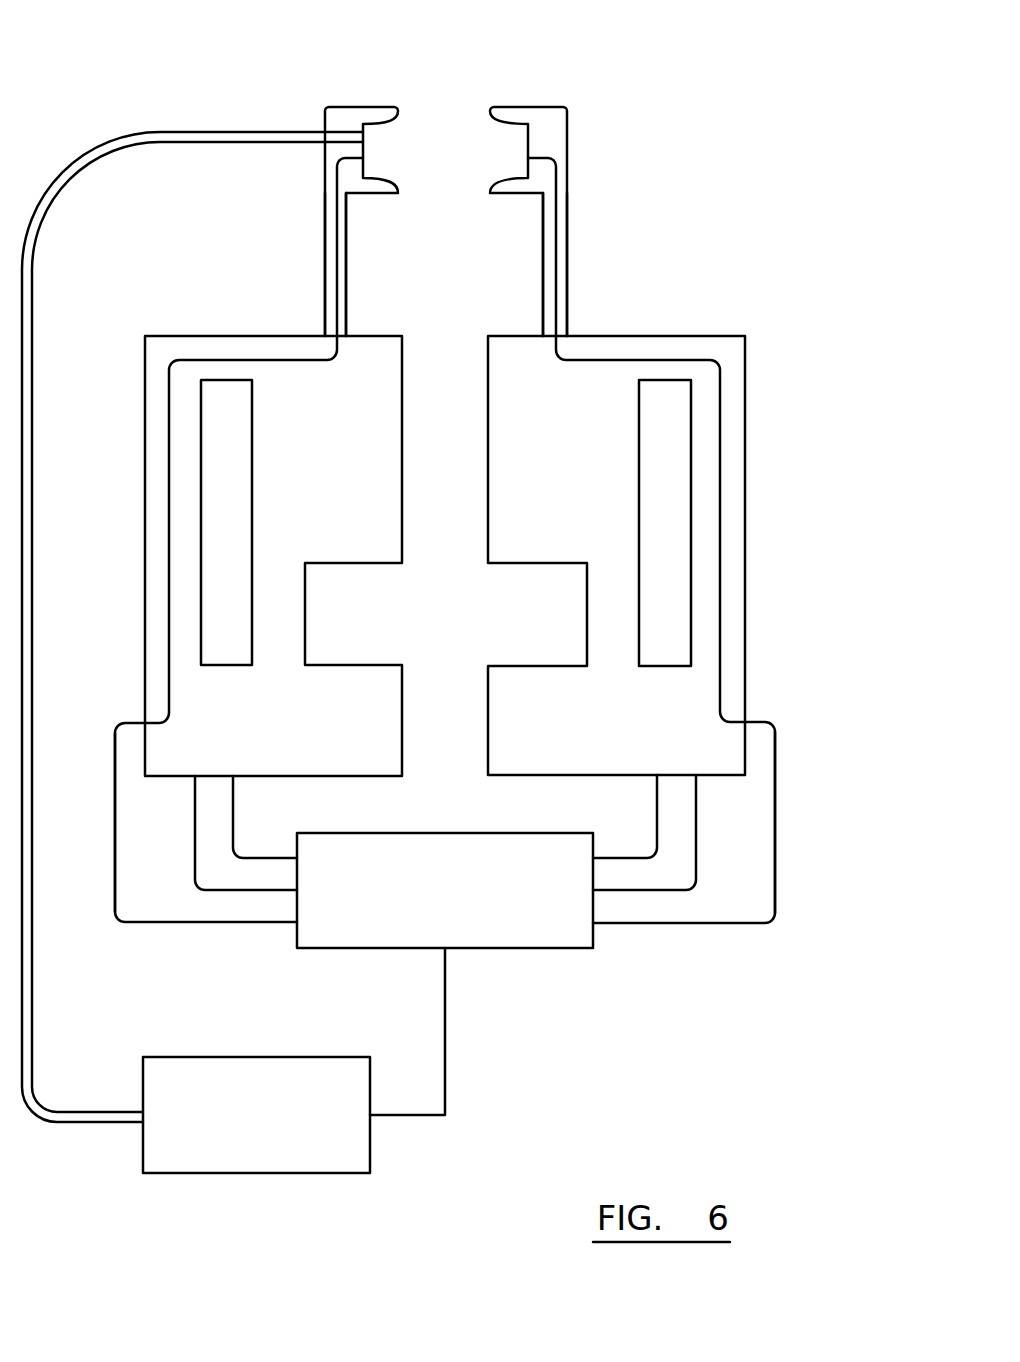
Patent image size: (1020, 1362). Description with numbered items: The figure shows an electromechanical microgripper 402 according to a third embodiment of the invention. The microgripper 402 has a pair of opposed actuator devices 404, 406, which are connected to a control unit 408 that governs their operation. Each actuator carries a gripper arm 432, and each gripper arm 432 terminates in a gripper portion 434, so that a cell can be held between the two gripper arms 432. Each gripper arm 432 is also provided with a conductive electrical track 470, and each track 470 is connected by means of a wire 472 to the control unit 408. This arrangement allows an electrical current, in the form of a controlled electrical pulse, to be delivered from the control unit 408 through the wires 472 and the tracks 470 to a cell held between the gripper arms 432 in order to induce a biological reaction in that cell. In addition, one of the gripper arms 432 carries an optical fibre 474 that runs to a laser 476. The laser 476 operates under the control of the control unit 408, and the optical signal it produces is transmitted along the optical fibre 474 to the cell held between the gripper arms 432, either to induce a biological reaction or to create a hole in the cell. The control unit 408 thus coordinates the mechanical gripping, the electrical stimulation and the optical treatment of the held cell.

The microgripper 402 is at (627, 248).
The actuator device 404 is at (145, 480).
The actuator device 406 is at (668, 707).
The control unit 408 is at (548, 912).
The gripper arm 432 is at (323, 212).
The gripper portion 434 is at (347, 117).
The conductive electrical track 470 is at (335, 266).
The wire 472 is at (113, 843).
The optical fibre 474 is at (166, 137).
The laser 476 is at (282, 1142).